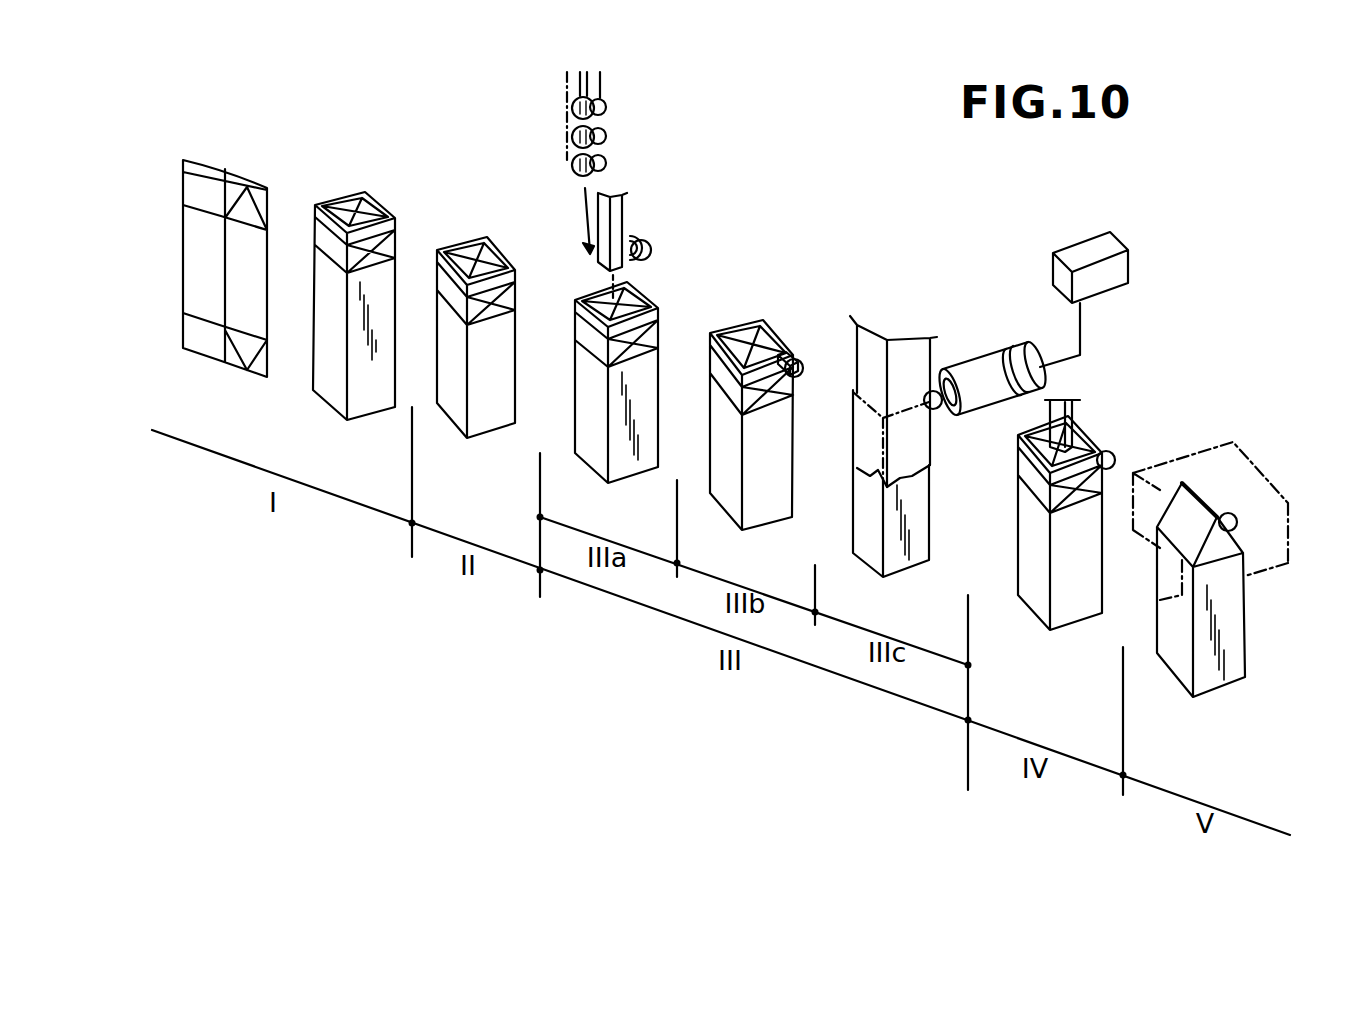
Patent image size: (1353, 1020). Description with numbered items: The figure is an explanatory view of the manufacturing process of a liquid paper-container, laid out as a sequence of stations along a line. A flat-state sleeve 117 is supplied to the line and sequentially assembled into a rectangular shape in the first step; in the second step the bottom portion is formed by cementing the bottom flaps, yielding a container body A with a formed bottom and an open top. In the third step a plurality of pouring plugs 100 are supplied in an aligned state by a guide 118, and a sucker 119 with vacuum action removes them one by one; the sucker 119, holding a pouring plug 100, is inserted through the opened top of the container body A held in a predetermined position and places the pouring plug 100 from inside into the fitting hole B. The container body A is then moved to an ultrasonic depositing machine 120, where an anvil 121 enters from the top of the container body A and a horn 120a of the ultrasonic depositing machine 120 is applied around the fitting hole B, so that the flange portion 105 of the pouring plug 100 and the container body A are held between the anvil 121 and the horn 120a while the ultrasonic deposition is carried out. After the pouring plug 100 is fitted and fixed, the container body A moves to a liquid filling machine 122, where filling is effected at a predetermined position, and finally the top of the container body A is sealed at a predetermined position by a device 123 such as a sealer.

The flat-state sleeve 117 is at (183, 258).
The guide 118 is at (566, 112).
The pouring plug 100 is at (606, 108).
The sucker 119 is at (624, 205).
The flange portion 105 is at (632, 243).
The anvil 121 is at (908, 358).
The ultrasonic depositing machine 120 is at (1070, 246).
The horn 120a is at (988, 352).
The liquid filling machine 122 is at (1062, 412).
The device such as a sealer 123 is at (1190, 450).
The container body A is at (488, 408).
The fitting hole B is at (372, 227).